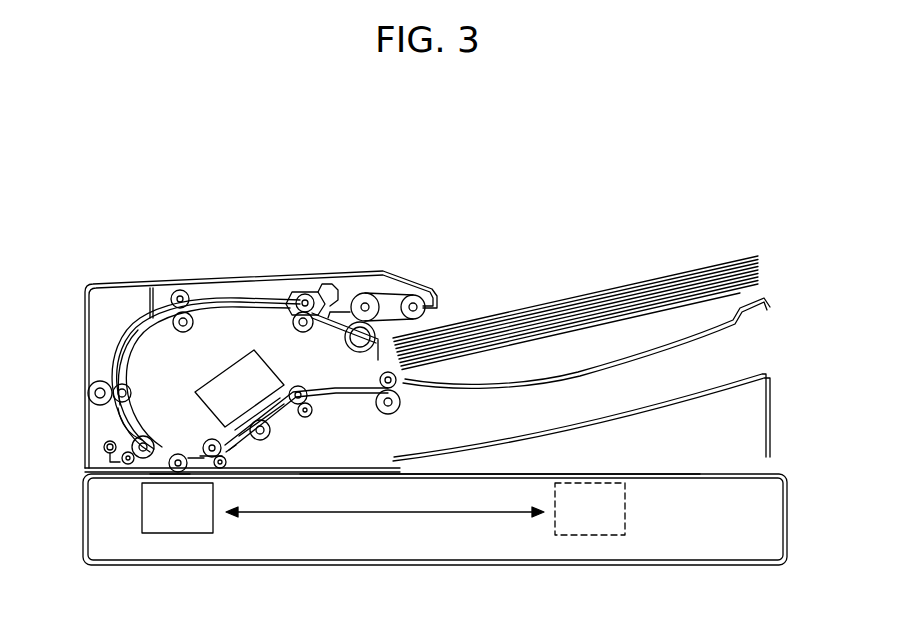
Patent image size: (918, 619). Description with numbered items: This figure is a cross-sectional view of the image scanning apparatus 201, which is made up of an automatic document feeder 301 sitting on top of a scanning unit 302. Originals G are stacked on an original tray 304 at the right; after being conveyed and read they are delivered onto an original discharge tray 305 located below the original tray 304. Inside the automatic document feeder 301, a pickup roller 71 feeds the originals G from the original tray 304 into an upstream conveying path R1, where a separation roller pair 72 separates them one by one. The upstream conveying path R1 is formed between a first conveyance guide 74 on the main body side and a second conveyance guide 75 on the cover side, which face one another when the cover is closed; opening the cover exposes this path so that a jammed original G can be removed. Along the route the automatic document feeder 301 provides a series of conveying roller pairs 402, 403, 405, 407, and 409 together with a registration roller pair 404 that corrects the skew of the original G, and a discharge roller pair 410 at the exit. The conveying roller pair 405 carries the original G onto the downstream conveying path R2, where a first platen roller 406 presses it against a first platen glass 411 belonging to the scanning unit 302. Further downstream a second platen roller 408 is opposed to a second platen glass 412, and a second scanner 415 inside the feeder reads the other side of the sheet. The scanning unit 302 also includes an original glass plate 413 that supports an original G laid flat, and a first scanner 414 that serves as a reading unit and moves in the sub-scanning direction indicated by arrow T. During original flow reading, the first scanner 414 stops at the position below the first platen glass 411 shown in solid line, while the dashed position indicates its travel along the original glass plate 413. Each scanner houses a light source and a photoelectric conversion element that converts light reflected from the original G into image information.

The image scanning apparatus 201 is at (470, 160).
The automatic document feeder 301 is at (238, 272).
The scanning unit 302 is at (792, 518).
The original tray 304 is at (742, 312).
The original discharge tray 305 is at (712, 385).
The pickup roller 71 is at (413, 296).
The separation roller pair 72 is at (365, 292).
The first conveyance guide 74 is at (247, 305).
The second conveyance guide 75 is at (208, 297).
The conveying roller pair 402 is at (306, 293).
The conveying roller pair 403 is at (180, 290).
The registration roller pair 404 is at (100, 383).
The conveying roller pair 405 is at (145, 435).
The first platen roller 406 is at (179, 452).
The conveying roller pair 407 is at (228, 462).
The second platen roller 408 is at (270, 432).
The conveying roller pair 409 is at (308, 389).
The discharge roller pair 410 is at (400, 401).
The first platen glass 411 is at (168, 475).
The second platen glass 412 is at (268, 420).
The original glass plate 413 is at (644, 472).
The first scanner 414 is at (140, 520).
The second scanner 415 is at (218, 370).
The original G is at (570, 292).
The upstream conveying path R1 is at (152, 316).
The downstream conveying path R2 is at (107, 430).
The sub-scanning direction T is at (385, 525).